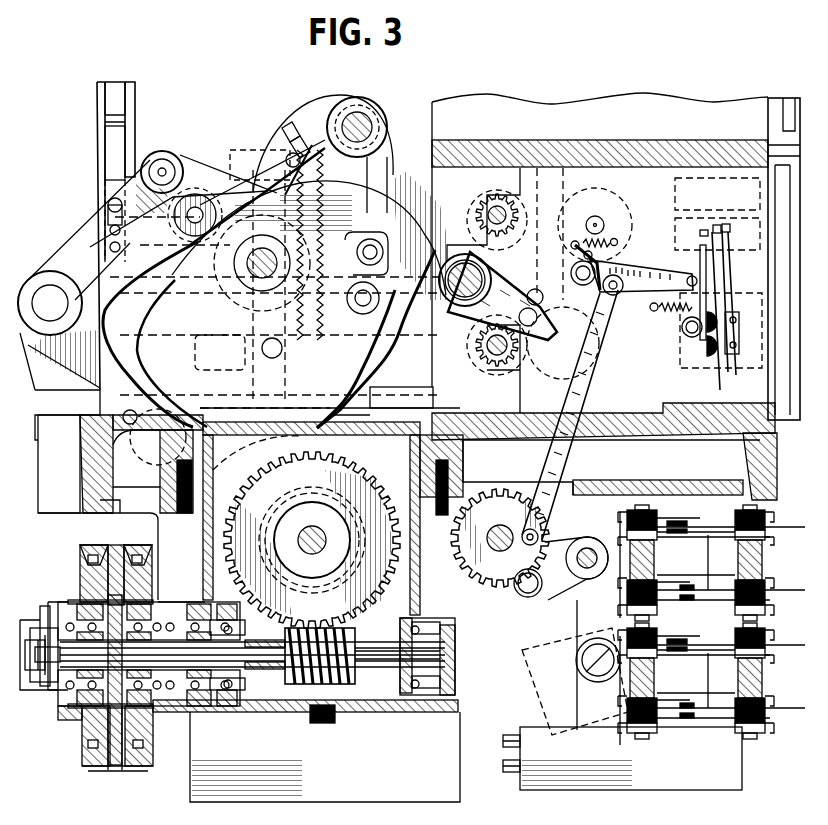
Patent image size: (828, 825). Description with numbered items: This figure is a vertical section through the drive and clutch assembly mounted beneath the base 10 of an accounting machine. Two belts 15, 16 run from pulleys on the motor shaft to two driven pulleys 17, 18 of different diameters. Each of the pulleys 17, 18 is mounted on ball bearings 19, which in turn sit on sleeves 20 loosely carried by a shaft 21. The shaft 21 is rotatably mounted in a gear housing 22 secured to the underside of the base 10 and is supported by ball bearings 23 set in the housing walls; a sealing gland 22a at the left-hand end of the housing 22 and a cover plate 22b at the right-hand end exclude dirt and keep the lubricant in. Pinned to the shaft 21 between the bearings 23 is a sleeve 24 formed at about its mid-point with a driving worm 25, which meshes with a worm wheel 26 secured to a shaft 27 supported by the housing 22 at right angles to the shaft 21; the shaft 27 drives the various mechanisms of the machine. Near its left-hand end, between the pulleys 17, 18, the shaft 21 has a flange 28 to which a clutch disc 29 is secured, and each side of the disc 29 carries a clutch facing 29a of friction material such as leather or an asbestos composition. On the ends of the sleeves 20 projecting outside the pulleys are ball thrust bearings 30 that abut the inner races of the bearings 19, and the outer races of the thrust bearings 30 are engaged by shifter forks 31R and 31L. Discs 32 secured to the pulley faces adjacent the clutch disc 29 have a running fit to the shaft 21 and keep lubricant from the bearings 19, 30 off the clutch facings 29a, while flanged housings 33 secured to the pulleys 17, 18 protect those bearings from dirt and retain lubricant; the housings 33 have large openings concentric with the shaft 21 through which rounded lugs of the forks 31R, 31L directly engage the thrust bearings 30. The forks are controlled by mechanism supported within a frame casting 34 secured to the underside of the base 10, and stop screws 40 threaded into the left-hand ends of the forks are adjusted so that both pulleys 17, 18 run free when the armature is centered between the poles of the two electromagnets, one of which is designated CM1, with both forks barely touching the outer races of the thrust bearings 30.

The base 10 is at (492, 468).
The belt 15 is at (92, 555).
The belt 16 is at (136, 550).
The driven pulley 17 is at (80, 572).
The driven pulley 18 is at (145, 582).
The ball bearings 19 is at (75, 706).
The sleeves 20 is at (100, 662).
The shaft 21 is at (372, 668).
The gear housing 22 is at (390, 712).
The sealing gland 22a is at (278, 678).
The cover plate 22b is at (468, 632).
The ball bearings 23 is at (220, 712).
The sleeve 24 is at (253, 712).
The driving worm 25 is at (322, 634).
The worm wheel 26 is at (352, 490).
The shaft 27 is at (320, 516).
The flange 28 is at (118, 653).
The clutch disc 29 is at (118, 770).
The clutch facing 29a is at (124, 760).
The ball thrust bearings 30 is at (70, 706).
The shifter fork 31L is at (48, 600).
The shifter fork 31R is at (200, 746).
The discs 32 is at (152, 602).
The flanged housings 33 is at (64, 612).
The frame casting 34 is at (48, 706).
The stop screws 40 is at (48, 700).
The bipolar electromagnet CM1 is at (42, 610).